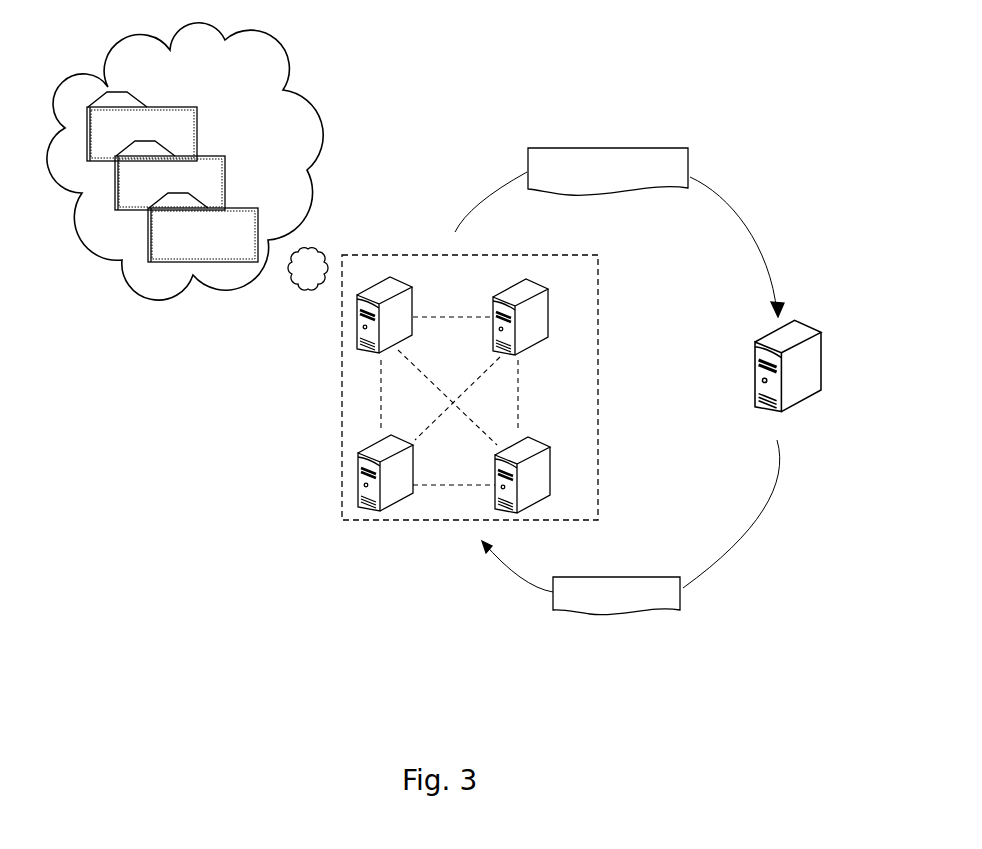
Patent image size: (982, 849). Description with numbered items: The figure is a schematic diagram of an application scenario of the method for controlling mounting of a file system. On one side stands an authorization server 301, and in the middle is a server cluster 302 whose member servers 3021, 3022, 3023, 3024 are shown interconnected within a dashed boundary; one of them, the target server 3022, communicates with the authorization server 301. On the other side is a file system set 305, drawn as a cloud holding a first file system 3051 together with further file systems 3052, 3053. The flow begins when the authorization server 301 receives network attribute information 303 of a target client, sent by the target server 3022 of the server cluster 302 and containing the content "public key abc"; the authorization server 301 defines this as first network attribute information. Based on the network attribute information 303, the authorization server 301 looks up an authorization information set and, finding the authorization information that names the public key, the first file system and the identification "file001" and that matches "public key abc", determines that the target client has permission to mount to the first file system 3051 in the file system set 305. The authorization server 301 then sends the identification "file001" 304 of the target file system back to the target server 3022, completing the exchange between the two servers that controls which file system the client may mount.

The authorization server 301 is at (808, 329).
The server cluster 302 is at (538, 255).
The blockchain node 3021 is at (453, 287).
The target server 3022 is at (586, 287).
The blockchain node 3023 is at (453, 460).
The blockchain node 3024 is at (588, 460).
The network attribute information 303 is at (686, 149).
The identification of the target file system 304 is at (650, 577).
The file system set 305 is at (293, 29).
The file system 1 3051 is at (207, 89).
The file system 2 3052 is at (237, 139).
The file system 3 3053 is at (270, 191).